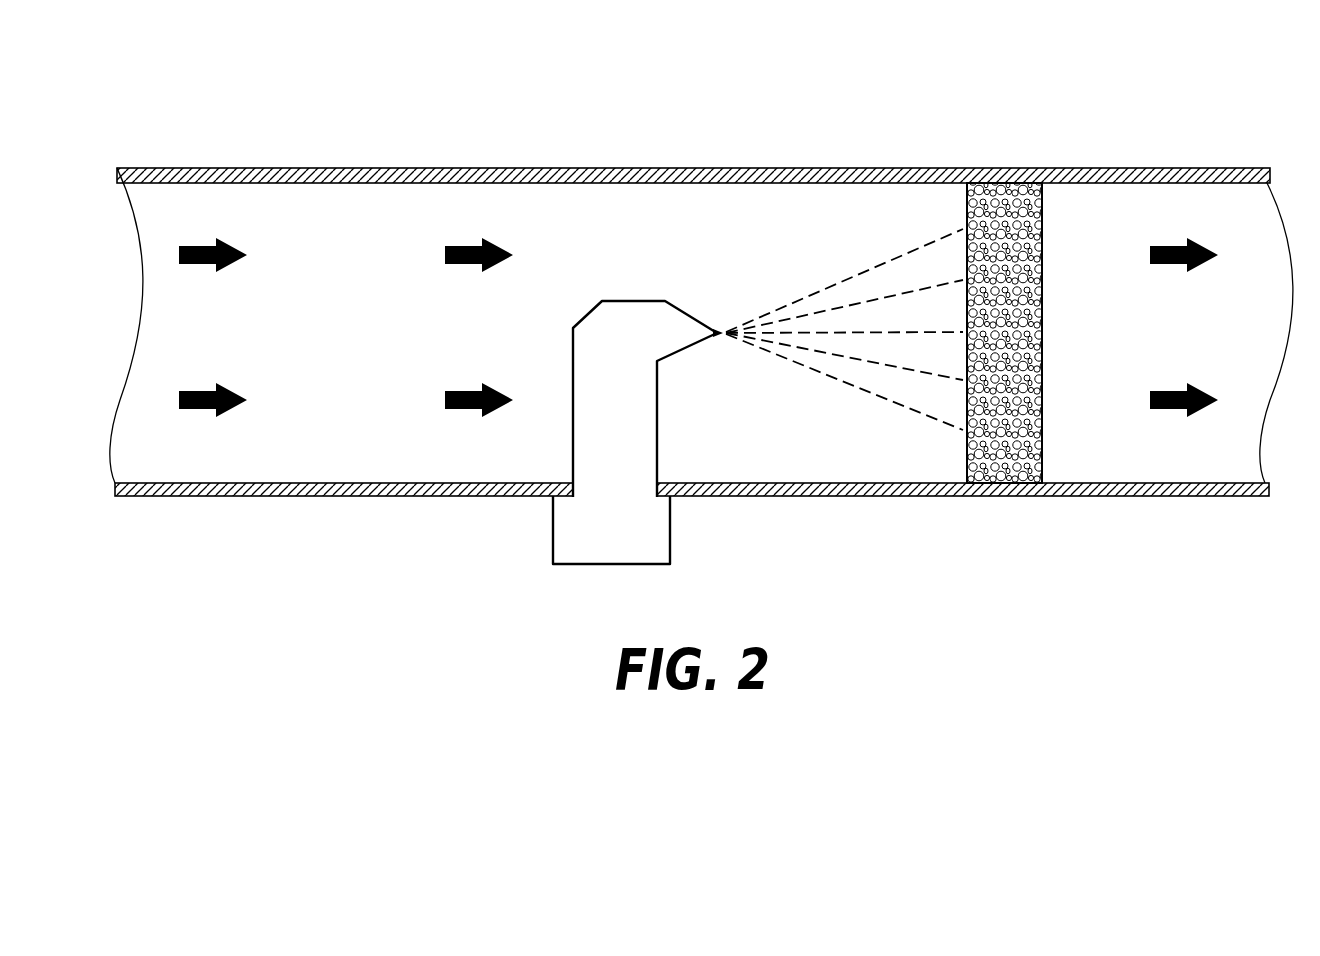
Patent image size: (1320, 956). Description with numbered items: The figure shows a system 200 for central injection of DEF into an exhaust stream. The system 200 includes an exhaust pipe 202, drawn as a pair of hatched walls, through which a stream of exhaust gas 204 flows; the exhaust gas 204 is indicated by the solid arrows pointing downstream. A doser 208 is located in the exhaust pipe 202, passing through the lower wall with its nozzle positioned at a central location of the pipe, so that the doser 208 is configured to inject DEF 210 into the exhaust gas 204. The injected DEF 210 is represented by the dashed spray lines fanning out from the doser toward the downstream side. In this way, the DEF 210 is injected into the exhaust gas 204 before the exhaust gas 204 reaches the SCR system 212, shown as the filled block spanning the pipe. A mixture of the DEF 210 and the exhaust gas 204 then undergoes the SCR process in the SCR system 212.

The system 200 is at (198, 128).
The exhaust pipe 202 is at (522, 168).
The exhaust gas 204 is at (227, 267).
The doser 208 is at (632, 303).
The DEF 210 is at (825, 288).
The SCR system 212 is at (1007, 188).